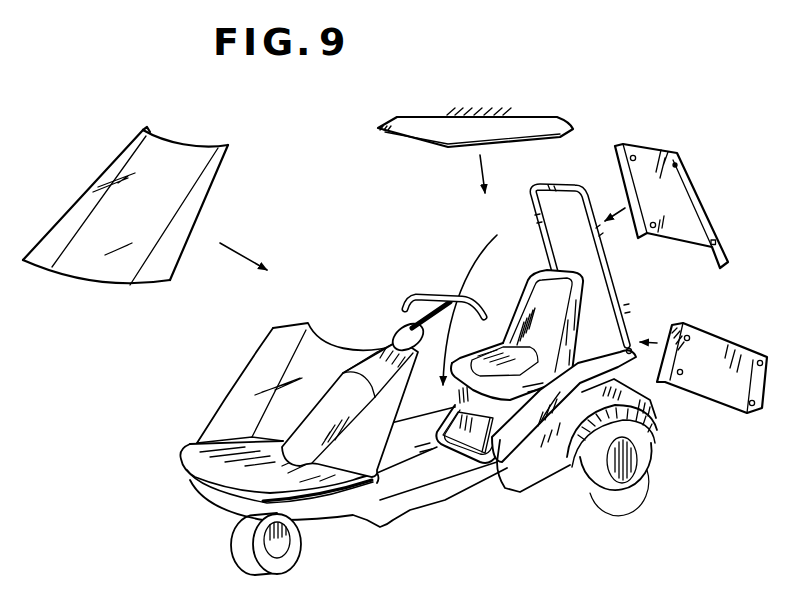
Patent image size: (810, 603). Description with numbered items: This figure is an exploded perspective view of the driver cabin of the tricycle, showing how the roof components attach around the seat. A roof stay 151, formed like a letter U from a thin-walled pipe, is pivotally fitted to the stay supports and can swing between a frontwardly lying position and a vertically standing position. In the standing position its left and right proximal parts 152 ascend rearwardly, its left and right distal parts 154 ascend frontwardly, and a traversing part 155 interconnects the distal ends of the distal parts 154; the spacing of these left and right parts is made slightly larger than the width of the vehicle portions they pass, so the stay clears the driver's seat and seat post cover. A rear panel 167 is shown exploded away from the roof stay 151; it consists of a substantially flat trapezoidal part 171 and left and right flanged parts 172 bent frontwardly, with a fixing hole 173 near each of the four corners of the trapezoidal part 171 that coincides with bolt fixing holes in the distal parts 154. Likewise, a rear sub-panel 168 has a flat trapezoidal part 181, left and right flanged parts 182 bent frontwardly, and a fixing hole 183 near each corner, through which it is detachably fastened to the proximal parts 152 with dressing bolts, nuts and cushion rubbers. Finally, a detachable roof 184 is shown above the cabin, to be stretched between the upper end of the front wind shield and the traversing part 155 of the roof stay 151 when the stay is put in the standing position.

The roof stay 151 is at (505, 477).
The proximal parts 152 is at (633, 303).
The distal parts 154 is at (527, 437).
The traversing part 155 is at (477, 467).
The rear panel 167 is at (668, 169).
The rear sub-panel 168 is at (715, 388).
The trapezoidal part 171 is at (658, 183).
The flanged parts 172 is at (620, 170).
The fixing hole 173 is at (633, 155).
The trapezoidal part 181 is at (720, 383).
The flanged parts 182 is at (680, 377).
The fixing hole 183 is at (688, 373).
The roof 184 is at (468, 117).